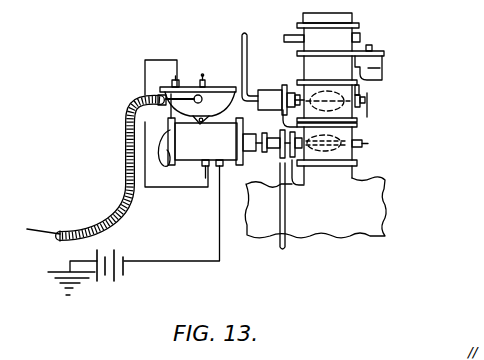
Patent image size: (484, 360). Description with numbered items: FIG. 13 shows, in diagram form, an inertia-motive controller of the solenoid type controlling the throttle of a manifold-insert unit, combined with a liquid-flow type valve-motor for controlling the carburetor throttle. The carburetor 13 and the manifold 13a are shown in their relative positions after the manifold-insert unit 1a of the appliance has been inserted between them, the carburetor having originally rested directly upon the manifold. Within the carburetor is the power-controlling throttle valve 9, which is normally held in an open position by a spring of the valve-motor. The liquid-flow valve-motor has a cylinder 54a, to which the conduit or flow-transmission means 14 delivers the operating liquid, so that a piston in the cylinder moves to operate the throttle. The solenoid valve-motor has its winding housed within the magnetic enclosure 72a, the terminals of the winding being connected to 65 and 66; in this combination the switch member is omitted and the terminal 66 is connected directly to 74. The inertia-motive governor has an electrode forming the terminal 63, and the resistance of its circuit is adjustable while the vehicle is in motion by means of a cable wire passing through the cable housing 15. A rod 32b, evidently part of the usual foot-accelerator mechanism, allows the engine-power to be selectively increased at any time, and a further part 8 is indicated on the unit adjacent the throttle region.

The manifold-insert unit 1a is at (343, 134).
The valve shaft 8 is at (352, 147).
The throttle valve 9 is at (329, 92).
The carburetor 13 is at (378, 68).
The manifold 13a is at (388, 213).
The conduit or flow-transmission means 14 is at (242, 56).
The cable housing 15 is at (126, 149).
The rod 32b is at (292, 208).
The cylinder 54a is at (272, 89).
The electrode 63 is at (176, 78).
The winding terminal 65 is at (208, 177).
The winding terminal 66 is at (222, 211).
The magnetic enclosure 72a is at (195, 143).
The electrical connection point 74 is at (116, 252).